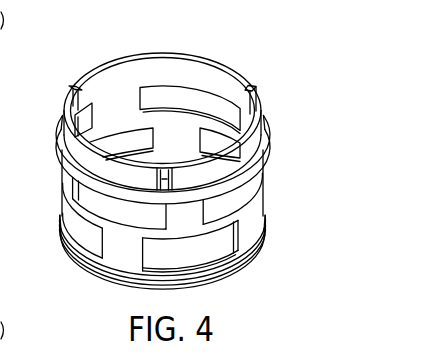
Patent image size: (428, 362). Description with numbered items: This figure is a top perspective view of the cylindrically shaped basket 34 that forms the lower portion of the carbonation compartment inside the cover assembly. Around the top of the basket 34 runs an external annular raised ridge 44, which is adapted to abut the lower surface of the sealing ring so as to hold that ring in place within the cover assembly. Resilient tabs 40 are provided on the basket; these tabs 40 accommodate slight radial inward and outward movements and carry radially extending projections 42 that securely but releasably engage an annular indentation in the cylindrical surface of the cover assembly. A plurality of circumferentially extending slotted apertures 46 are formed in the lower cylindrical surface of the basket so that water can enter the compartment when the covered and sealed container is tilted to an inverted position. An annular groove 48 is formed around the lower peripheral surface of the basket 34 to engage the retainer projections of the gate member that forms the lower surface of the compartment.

The basket 34 is at (304, 108).
The resilient tabs 40 is at (164, 170).
The radially extending projections 42 is at (163, 187).
The external annular raised ridge 44 is at (267, 143).
The circumferentially extending slotted apertures 46 is at (242, 215).
The annular groove 48 is at (200, 284).